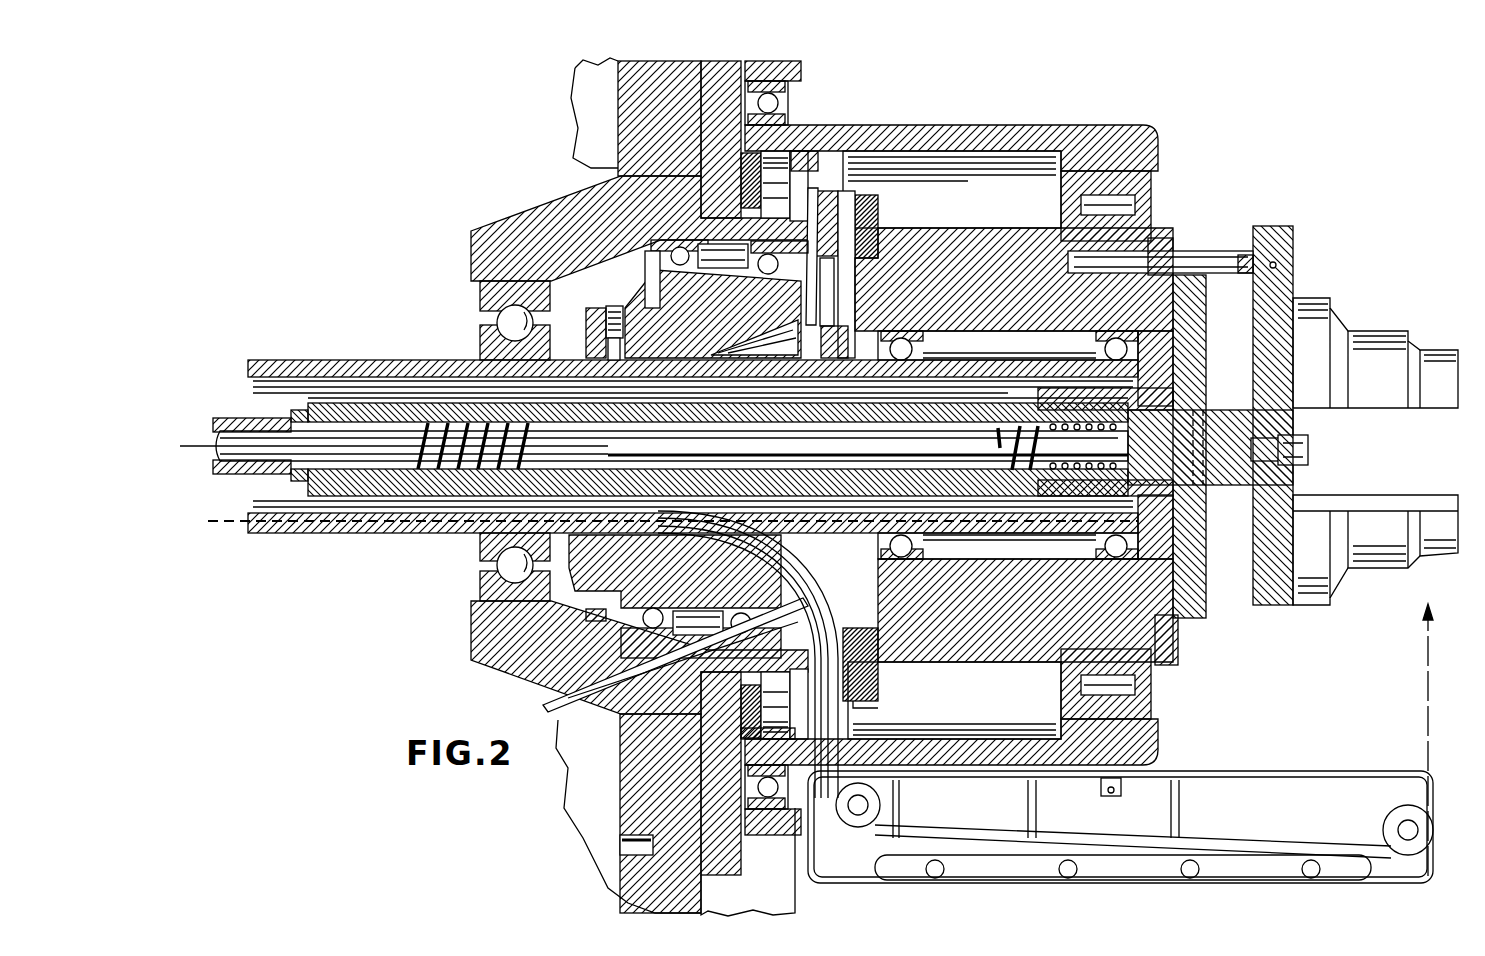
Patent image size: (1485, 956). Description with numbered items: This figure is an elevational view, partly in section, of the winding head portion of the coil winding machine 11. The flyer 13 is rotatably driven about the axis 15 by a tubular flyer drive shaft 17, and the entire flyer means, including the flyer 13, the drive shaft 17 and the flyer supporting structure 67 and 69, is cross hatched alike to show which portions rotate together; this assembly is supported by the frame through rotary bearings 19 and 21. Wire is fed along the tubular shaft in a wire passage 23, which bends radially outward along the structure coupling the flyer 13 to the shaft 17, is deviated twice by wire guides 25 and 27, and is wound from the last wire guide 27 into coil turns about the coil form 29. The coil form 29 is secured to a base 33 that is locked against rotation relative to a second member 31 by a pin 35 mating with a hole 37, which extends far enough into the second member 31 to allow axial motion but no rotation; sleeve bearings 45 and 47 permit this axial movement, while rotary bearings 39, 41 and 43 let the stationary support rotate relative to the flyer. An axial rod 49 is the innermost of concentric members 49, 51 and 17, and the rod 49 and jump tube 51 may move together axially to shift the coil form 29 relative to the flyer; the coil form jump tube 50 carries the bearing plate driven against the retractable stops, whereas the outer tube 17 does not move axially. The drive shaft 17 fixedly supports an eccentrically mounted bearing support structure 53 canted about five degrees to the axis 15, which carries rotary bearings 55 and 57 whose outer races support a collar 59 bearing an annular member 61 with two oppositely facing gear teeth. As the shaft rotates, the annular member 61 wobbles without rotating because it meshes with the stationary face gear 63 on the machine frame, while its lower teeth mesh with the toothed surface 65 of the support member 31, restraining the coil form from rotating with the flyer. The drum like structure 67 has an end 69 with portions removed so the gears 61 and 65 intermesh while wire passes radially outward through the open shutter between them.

The machine 11 is at (545, 195).
The flyer 13 is at (1322, 765).
The axis 15 is at (181, 440).
The tubular flyer drive shaft 17 is at (320, 350).
The rotary bearing 19 is at (470, 294).
The rotary bearing 21 is at (783, 92).
The wire passage 23 is at (390, 524).
The wire guide 25 is at (858, 818).
The wire guide 27 is at (1395, 800).
The coil form 29 is at (1378, 332).
The second member 31 is at (1170, 640).
The base 33 is at (1270, 598).
The pin 35 is at (1215, 250).
The hole 37 is at (1040, 222).
The rotary bearing 39 is at (1147, 712).
The rotary bearing 41 is at (912, 545).
The rotary bearing 43 is at (1085, 545).
The sleeve bearing 45 is at (1192, 524).
The sleeve bearing 47 is at (1203, 418).
The axial rod 49 is at (213, 424).
The coil form jump tube 50 is at (233, 408).
The jump tube 51 is at (410, 393).
The bearing support structure 53 is at (612, 300).
The rotary bearing 55 is at (622, 605).
The rotary bearing 57 is at (565, 690).
The collar 59 is at (600, 190).
The annular member 61 is at (868, 692).
The face gear 63 is at (728, 172).
The toothed surface 65 is at (872, 208).
The drum like structure 67 is at (1045, 120).
The end 69 is at (850, 592).